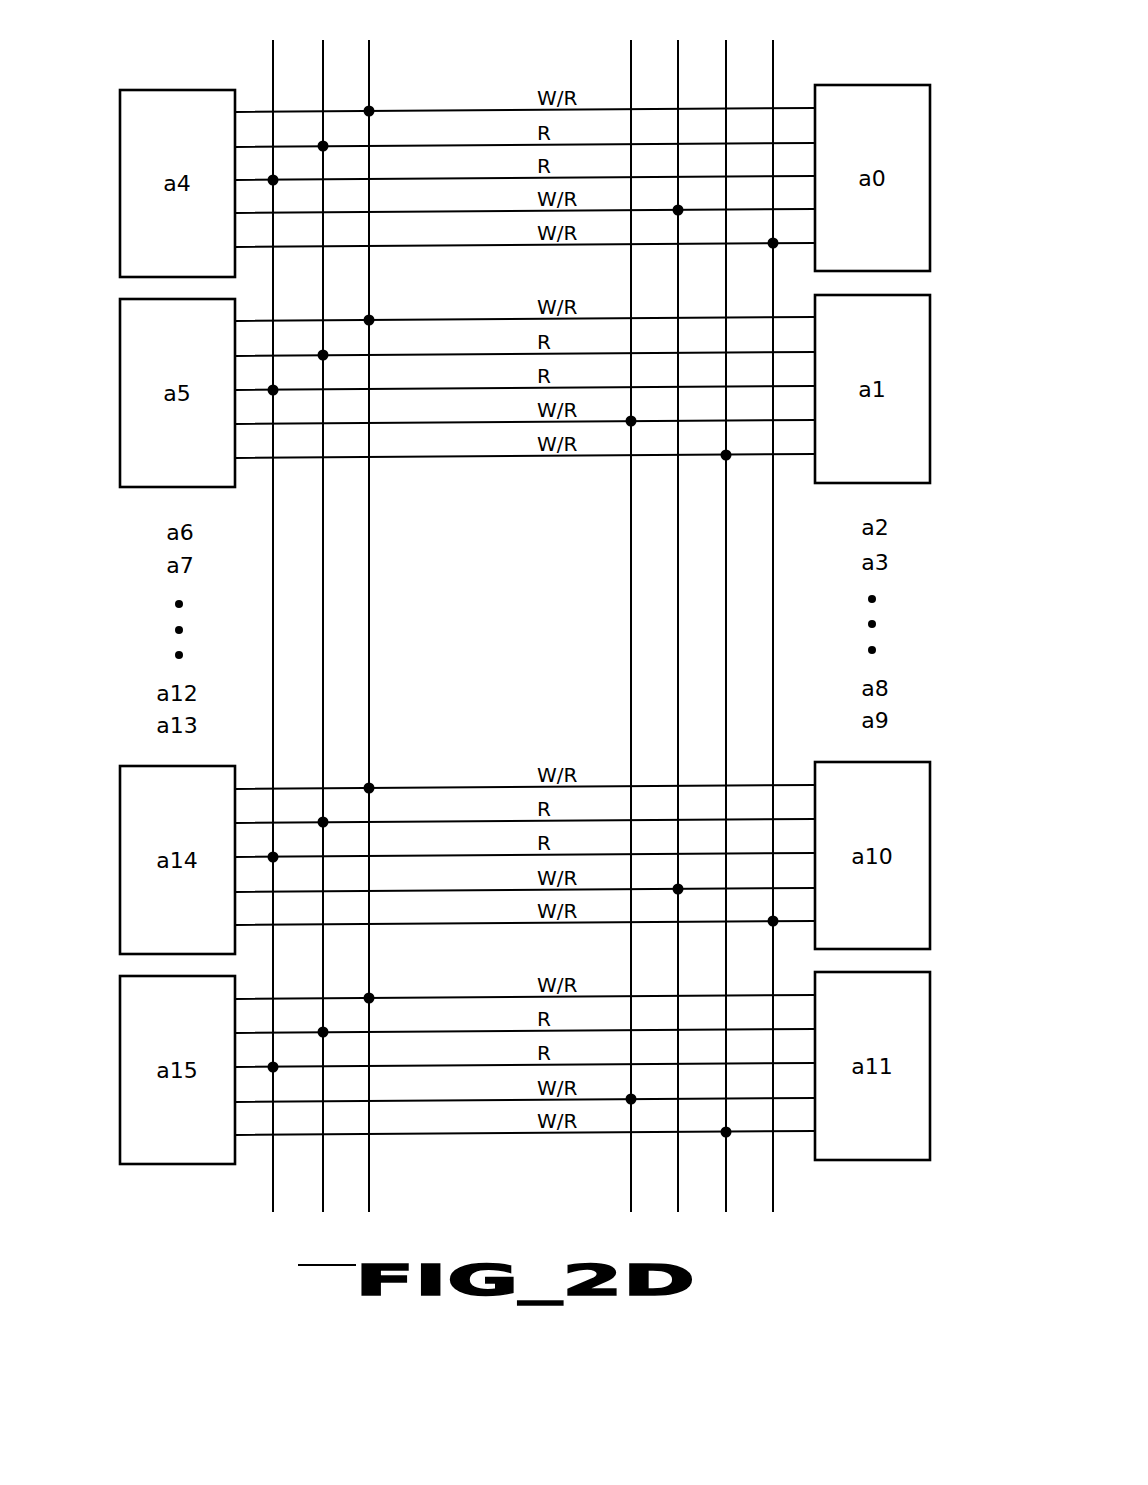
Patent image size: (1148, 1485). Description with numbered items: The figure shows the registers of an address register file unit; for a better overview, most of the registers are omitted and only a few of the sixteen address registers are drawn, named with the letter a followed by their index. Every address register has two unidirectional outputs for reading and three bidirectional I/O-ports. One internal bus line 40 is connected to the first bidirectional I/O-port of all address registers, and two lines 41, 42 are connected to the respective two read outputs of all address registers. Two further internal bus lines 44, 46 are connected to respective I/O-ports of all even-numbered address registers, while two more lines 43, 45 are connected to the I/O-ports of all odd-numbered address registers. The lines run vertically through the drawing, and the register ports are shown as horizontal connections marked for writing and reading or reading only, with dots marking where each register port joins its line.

The internal bus line 40 is at (369, 683).
The line 41 is at (323, 645).
The line 42 is at (273, 602).
The line 43 is at (631, 587).
The internal bus line 44 is at (678, 628).
The line 45 is at (726, 670).
The internal bus line 46 is at (773, 707).